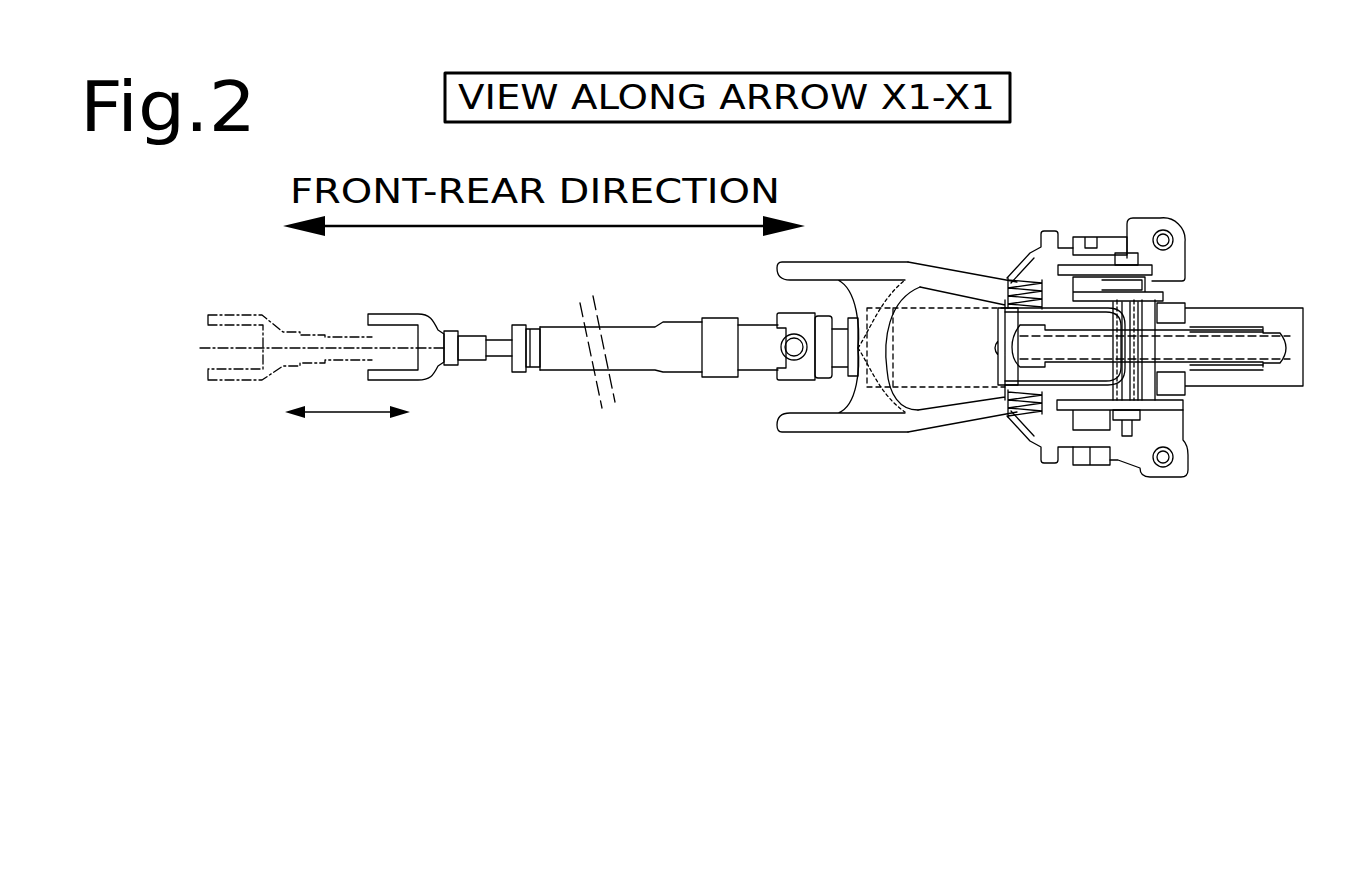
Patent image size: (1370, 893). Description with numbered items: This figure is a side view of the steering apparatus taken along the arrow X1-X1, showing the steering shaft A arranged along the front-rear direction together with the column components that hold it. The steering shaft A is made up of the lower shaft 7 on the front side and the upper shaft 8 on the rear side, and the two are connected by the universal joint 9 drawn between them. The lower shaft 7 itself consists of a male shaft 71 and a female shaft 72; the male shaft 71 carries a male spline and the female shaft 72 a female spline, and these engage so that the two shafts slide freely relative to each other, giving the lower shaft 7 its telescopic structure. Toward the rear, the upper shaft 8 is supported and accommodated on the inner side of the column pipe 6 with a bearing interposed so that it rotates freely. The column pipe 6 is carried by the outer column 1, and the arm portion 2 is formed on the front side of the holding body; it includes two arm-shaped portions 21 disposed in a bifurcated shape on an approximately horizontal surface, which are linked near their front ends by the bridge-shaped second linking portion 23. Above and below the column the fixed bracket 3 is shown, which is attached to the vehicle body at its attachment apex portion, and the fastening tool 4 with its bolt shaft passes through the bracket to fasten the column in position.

The outer column 1 is at (1197, 300).
The arm portion 2 is at (1030, 330).
The fixed bracket 3 is at (1190, 252).
The fastening tool 4 is at (1125, 253).
The column pipe 6 is at (1225, 380).
The lower shaft 7 is at (633, 347).
The upper shaft 8 is at (840, 395).
The universal joint 9 is at (778, 395).
The arm-shaped portion 21 is at (948, 274).
The second linking portion 23 is at (927, 408).
The male shaft 71 is at (505, 358).
The female shaft 72 is at (636, 371).
The steering shaft A is at (718, 378).